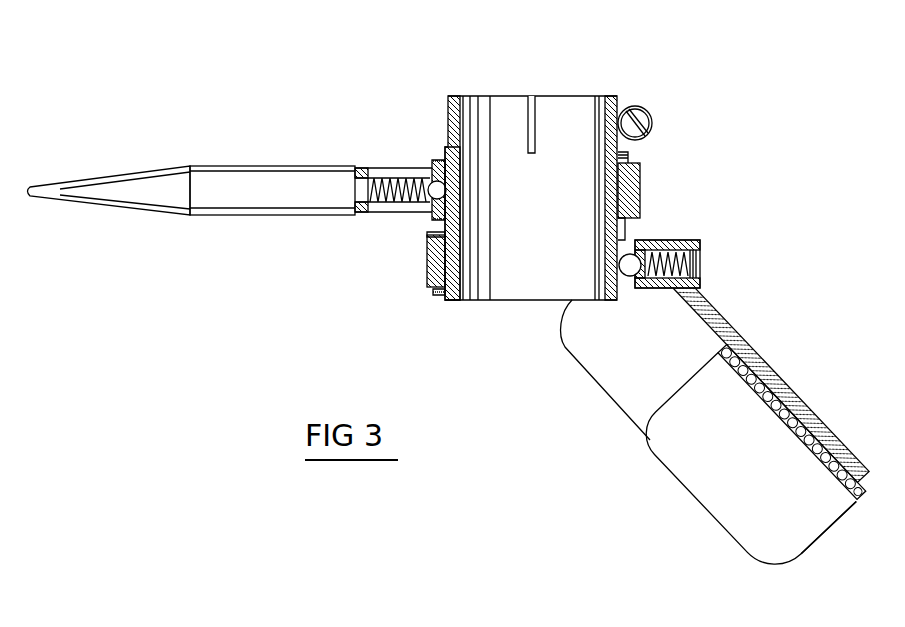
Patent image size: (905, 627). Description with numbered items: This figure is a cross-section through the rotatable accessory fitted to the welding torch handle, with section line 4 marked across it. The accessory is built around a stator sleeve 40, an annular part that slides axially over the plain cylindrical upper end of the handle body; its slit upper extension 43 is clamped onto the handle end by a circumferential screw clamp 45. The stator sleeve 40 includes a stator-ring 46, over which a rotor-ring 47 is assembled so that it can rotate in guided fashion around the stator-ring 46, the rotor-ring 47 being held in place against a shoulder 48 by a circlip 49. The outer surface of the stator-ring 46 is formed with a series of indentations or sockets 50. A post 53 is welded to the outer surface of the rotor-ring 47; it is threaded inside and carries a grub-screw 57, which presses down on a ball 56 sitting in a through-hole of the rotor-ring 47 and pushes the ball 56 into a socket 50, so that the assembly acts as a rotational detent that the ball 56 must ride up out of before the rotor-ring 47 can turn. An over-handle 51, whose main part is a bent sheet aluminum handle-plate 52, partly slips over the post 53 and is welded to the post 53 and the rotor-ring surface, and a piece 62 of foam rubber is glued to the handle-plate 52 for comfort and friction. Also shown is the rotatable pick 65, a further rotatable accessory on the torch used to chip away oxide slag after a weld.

The stator sleeve 40 is at (520, 275).
The upper extension 43 is at (508, 122).
The circumferential screw clamp 45 is at (652, 112).
The stator-ring 46 is at (440, 248).
The rotor-ring 47 is at (428, 272).
The shoulder 48 is at (428, 228).
The circlip 49 is at (438, 296).
The indentation or socket 50 is at (452, 264).
The over-handle 51 is at (640, 437).
The handle-plate 52 is at (752, 352).
The post 53 is at (670, 242).
The ball 56 is at (620, 268).
The grub-screw 57 is at (700, 266).
The piece of foam rubber 62 is at (812, 514).
The rotatable pick 65 is at (268, 178).
The section line 4- 4 is at (318, 262).